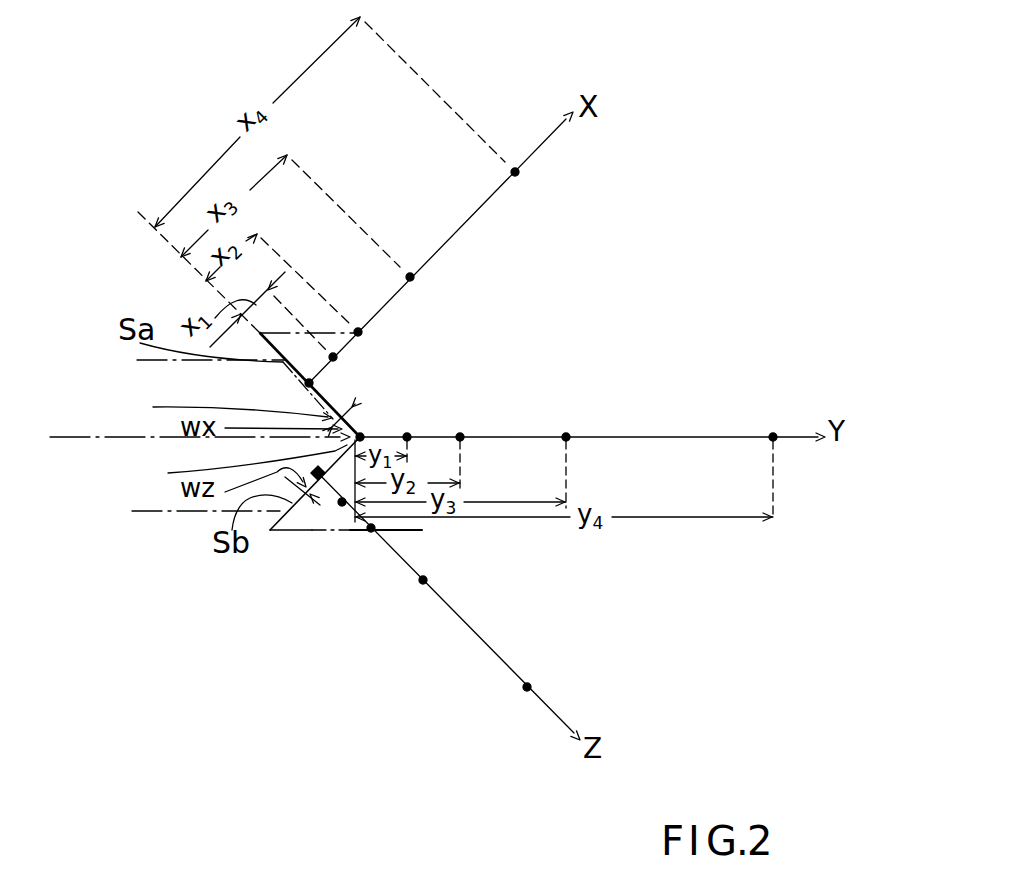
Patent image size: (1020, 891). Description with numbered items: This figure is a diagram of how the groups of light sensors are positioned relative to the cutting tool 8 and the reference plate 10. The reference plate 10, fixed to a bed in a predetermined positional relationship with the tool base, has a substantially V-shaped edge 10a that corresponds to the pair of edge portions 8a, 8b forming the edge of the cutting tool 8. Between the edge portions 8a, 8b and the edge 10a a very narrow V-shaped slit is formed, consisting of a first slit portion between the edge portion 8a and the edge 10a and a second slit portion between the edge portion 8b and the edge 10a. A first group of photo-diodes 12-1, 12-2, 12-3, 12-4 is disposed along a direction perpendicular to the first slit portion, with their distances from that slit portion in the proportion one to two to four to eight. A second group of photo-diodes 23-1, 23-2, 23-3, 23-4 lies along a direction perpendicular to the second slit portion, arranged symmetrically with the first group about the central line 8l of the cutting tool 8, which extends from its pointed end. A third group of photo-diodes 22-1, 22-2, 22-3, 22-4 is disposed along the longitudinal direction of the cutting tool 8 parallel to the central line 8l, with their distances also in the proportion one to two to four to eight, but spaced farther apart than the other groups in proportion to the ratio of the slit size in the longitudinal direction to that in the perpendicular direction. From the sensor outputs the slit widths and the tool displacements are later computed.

The cutting tool 8 is at (178, 513).
The central line of the cutting tool 8l is at (78, 437).
The edge portion of the cutting tool 8a is at (226, 403).
The edge portion of the cutting tool 8b is at (240, 463).
The reference plate 10 is at (280, 403).
The V-shaped edge of the reference plate 10a is at (287, 368).
The photo-diode 12-1 is at (337, 360).
The photo-diode 12-2 is at (362, 336).
The photo-diode 12-3 is at (414, 280).
The photo-diode 12-4 is at (519, 176).
The photo-diode 22-1 is at (408, 433).
The photo-diode 22-2 is at (462, 433).
The photo-diode 22-3 is at (568, 433).
The photo-diode 22-4 is at (773, 433).
The photo-diode 23-1 is at (342, 506).
The photo-diode 23-2 is at (371, 532).
The photo-diode 23-3 is at (423, 584).
The photo-diode 23-4 is at (523, 690).